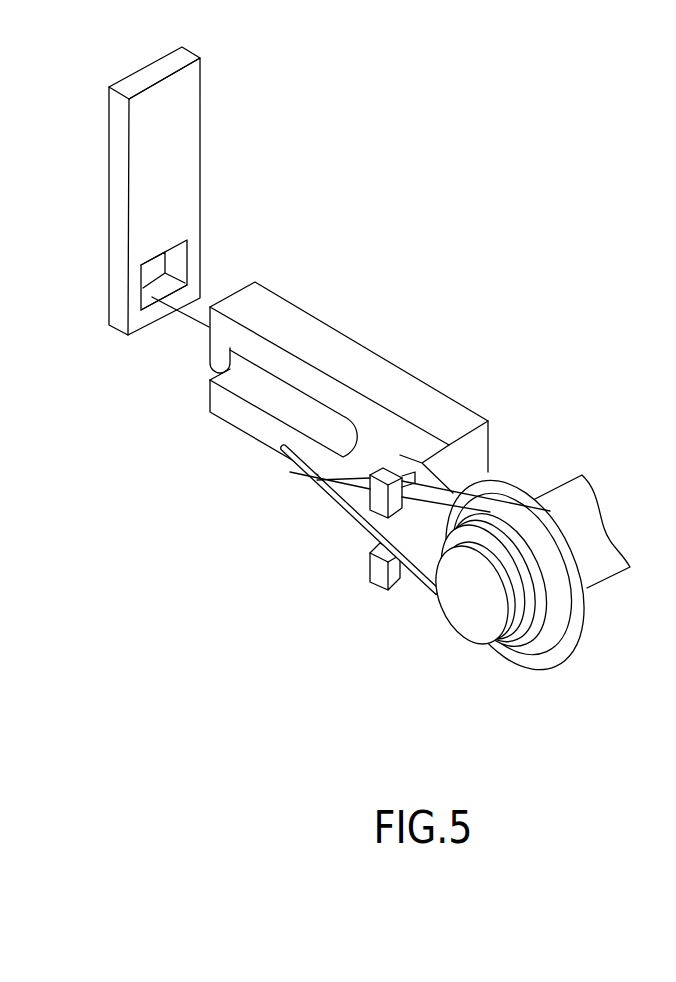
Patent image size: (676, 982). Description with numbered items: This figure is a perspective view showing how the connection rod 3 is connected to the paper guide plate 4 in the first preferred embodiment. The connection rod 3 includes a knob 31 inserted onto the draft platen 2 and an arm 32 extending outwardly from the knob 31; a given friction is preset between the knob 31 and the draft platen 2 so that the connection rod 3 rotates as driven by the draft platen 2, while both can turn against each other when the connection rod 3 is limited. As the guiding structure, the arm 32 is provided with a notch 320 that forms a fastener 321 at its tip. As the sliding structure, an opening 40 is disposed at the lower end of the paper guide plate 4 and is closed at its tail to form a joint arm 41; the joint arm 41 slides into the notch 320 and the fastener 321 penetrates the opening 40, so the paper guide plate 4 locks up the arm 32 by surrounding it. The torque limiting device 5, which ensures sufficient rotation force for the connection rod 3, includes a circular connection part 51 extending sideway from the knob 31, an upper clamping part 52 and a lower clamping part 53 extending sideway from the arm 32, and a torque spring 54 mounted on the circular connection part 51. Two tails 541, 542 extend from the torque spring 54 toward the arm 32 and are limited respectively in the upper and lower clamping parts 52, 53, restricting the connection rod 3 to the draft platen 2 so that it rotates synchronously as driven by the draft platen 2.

The draft platen 2 is at (468, 613).
The connection rod 3 is at (540, 428).
The paper guide plate 4 is at (217, 142).
The torque limiting device 5 is at (558, 688).
The knob 31 is at (578, 610).
The arm 32 is at (322, 327).
The opening 40 is at (162, 265).
The joint arm 41 is at (162, 308).
The circular connection part 51 is at (512, 645).
The upper clamping part 52 is at (378, 495).
The lower clamping part 53 is at (380, 573).
The torque spring 54 is at (553, 616).
The notch 320 is at (267, 398).
The fastener 321 is at (235, 337).
The tail 541 is at (283, 458).
The tail 542 is at (290, 480).